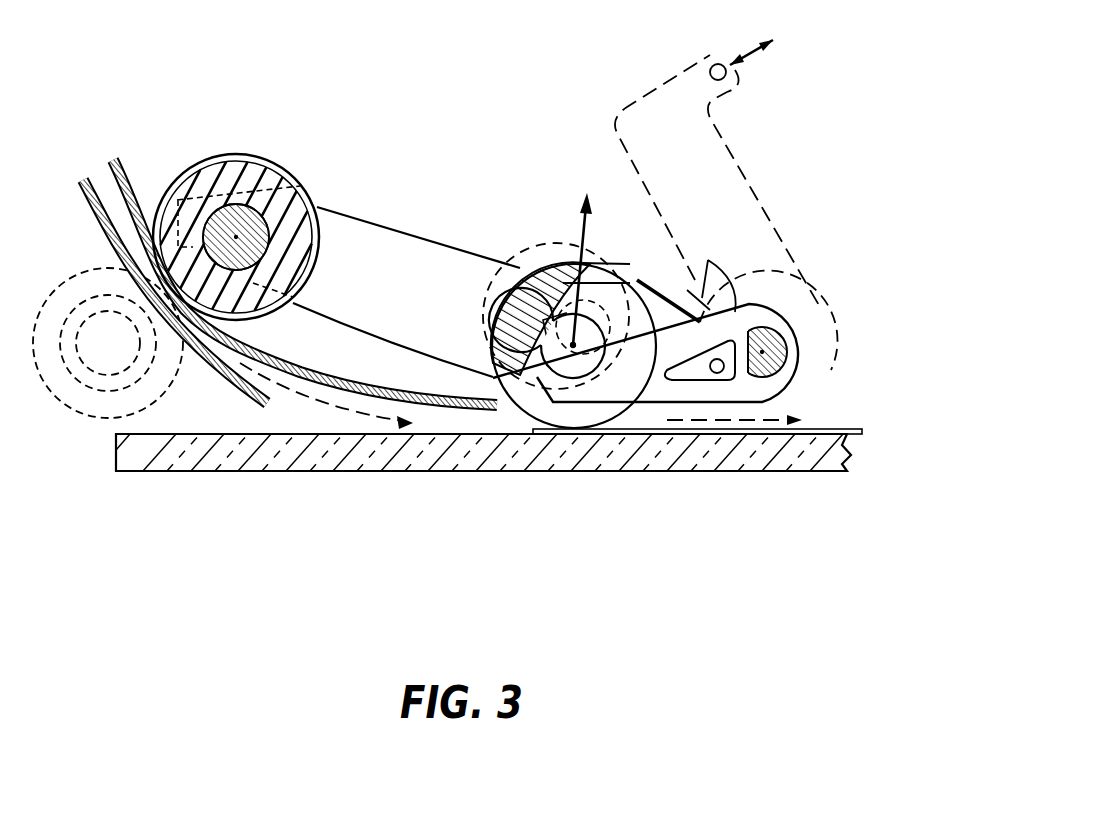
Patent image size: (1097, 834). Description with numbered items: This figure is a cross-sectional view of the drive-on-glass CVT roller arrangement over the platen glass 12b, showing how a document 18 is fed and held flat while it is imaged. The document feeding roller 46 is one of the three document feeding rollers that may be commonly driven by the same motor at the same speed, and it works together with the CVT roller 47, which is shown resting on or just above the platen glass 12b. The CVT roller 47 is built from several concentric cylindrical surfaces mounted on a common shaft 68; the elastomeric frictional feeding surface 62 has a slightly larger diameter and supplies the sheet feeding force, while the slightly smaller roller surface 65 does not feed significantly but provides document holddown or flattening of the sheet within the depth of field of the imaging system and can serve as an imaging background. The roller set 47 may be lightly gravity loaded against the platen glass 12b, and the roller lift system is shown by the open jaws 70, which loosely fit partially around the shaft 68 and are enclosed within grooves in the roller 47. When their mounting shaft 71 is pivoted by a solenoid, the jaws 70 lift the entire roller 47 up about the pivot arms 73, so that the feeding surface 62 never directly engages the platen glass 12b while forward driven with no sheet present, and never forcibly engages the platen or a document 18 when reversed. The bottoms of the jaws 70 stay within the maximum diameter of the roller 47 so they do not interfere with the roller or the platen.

The platen glass 12b is at (310, 473).
The documents 18 is at (827, 429).
The document feeding roller 46 is at (253, 153).
The CVT roller 47 is at (545, 307).
The sheet feeding surface 62 is at (513, 281).
The roller surface 65 is at (500, 328).
The shaft 68 is at (615, 325).
The open jaws 70 is at (645, 318).
The mounting shaft 71 is at (764, 352).
The pivot arms 73 is at (433, 238).